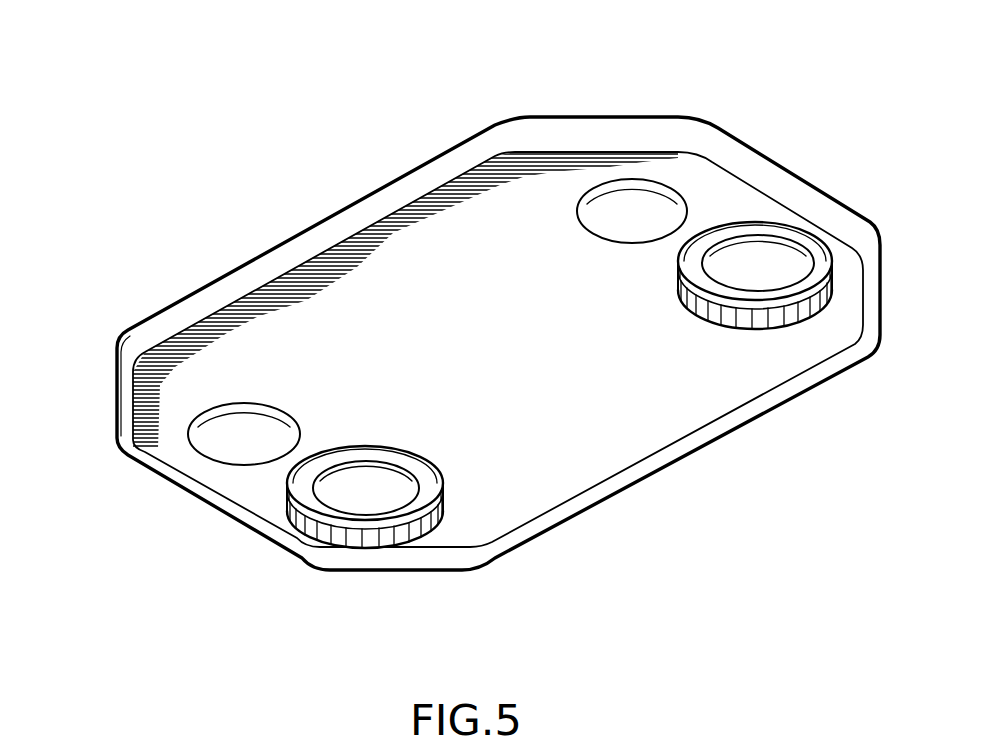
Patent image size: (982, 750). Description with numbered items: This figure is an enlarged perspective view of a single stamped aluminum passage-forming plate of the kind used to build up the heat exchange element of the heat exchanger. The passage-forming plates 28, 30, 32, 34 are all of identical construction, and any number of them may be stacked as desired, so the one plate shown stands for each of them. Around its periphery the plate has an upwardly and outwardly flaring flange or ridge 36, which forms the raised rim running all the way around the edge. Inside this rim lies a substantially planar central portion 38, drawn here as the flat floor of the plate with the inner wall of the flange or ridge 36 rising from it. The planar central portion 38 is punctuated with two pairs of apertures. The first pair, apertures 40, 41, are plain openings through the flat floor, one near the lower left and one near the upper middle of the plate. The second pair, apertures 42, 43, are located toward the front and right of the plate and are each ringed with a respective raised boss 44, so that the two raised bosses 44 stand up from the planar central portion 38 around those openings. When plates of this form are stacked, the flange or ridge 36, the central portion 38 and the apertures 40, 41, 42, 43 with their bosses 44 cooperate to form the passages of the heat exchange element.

The passage-forming plate 28 is at (462, 307).
The passage-forming plate 30 is at (462, 307).
The passage-forming plate 32 is at (462, 307).
The passage-forming plate 34 is at (462, 307).
The peripheral flange or ridge 36 is at (265, 527).
The planar central portion 38 is at (170, 424).
The aperture 40 is at (243, 445).
The aperture 41 is at (625, 213).
The aperture 42 is at (368, 478).
The aperture 43 is at (753, 268).
The raised boss 44 is at (787, 231).